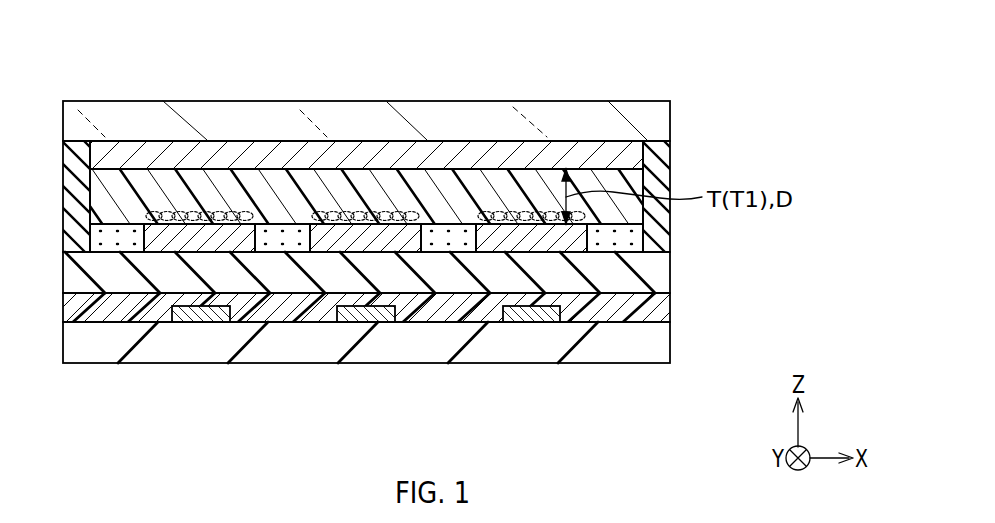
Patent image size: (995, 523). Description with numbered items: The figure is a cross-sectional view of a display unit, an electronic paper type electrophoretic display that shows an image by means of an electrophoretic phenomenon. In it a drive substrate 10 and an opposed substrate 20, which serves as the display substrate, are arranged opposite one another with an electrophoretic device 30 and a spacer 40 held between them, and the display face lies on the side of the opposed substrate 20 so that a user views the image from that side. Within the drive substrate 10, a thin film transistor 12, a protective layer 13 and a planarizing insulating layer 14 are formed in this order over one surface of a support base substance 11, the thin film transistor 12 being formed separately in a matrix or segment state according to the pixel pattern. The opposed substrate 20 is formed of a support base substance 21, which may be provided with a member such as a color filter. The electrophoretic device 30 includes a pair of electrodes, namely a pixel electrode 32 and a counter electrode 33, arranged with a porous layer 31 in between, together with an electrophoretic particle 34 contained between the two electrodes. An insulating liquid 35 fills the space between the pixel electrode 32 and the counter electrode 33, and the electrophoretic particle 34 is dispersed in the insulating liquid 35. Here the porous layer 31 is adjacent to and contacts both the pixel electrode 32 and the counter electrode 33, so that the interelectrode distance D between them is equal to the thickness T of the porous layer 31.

The drive substrate 10 is at (366, 352).
The support base substance 11 is at (120, 353).
The thin film transistor 12 is at (190, 318).
The protective layer 13 is at (247, 315).
The planarizing insulating layer 14 is at (328, 277).
The opposed substrate 20 is at (370, 117).
The support base substance 21 is at (110, 120).
The electrophoretic device 30 is at (455, 240).
The porous layer 31 is at (502, 187).
The pixel electrode 32 is at (527, 237).
The counter electrode 33 is at (205, 152).
The electrophoretic particle 34 is at (392, 212).
The insulating liquid 35 is at (283, 237).
The spacer 40 is at (657, 250).